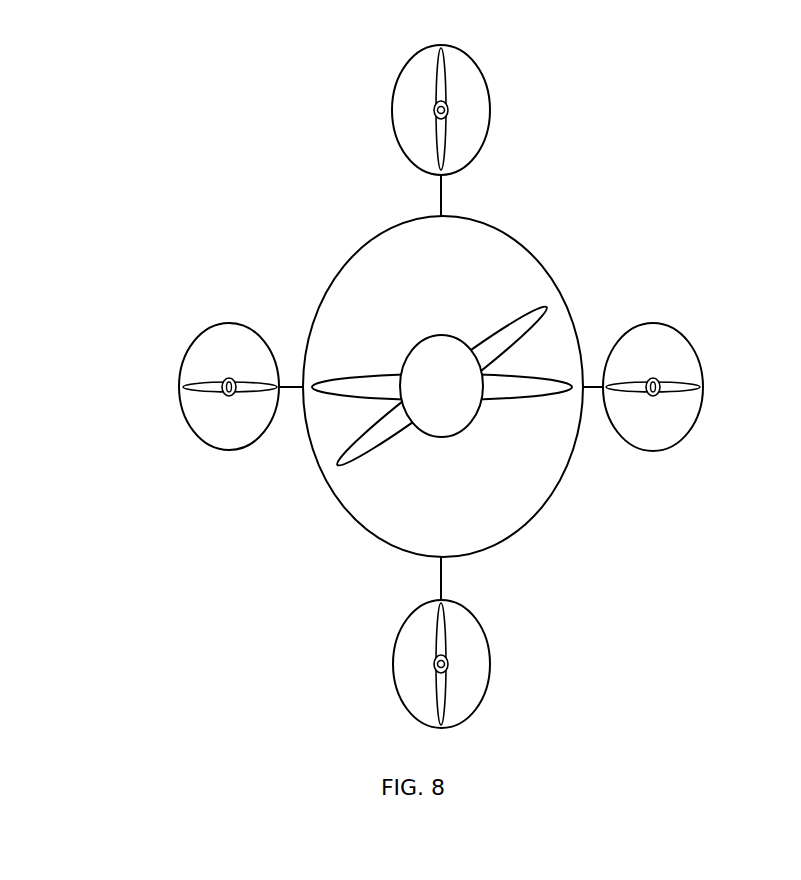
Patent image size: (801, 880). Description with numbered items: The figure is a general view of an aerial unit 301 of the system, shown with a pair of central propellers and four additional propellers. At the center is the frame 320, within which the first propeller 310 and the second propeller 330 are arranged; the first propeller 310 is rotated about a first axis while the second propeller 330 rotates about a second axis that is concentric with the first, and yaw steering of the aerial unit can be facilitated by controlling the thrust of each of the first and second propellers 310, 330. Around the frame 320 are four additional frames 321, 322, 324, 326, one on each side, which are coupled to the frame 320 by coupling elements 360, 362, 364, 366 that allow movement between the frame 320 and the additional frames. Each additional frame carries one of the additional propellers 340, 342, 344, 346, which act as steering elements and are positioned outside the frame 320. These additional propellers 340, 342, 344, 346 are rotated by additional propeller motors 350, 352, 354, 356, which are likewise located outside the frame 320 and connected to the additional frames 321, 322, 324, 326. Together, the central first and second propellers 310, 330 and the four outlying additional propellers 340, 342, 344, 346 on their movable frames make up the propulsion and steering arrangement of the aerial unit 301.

The aerial unit 301 is at (419, 399).
The first propeller 310 is at (538, 388).
The frame 320 is at (517, 236).
The second propeller 330 is at (332, 373).
The additional frame 321 is at (495, 117).
The additional frame 322 is at (658, 321).
The additional frame 324 is at (392, 693).
The additional frame 326 is at (228, 450).
The additional propeller 340 is at (448, 80).
The additional propeller 342 is at (685, 385).
The additional propeller 344 is at (452, 702).
The additional propeller 346 is at (208, 383).
The additional propeller motor 350 is at (434, 110).
The additional propeller motor 352 is at (650, 394).
The additional propeller motor 354 is at (448, 663).
The additional propeller motor 356 is at (229, 396).
The coupling element 360 is at (441, 197).
The coupling element 362 is at (595, 390).
The coupling element 364 is at (433, 588).
The coupling element 366 is at (293, 383).